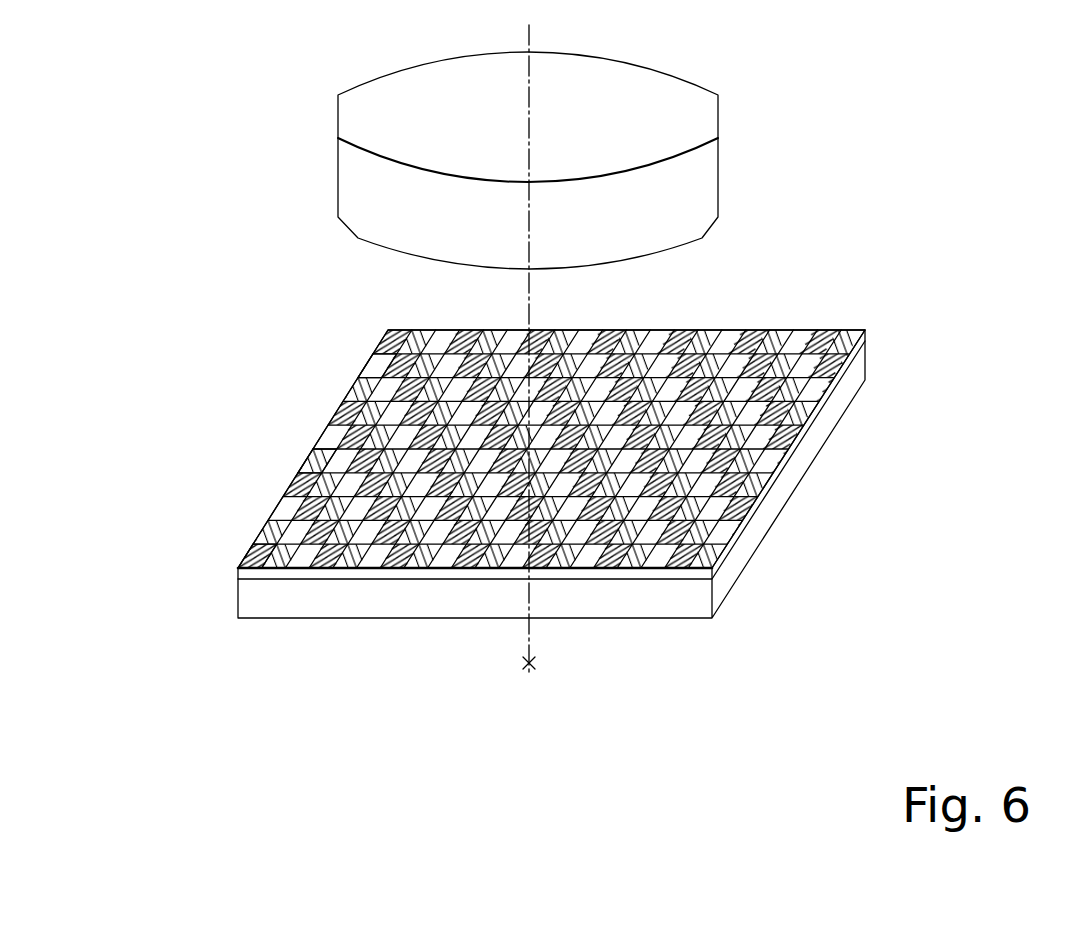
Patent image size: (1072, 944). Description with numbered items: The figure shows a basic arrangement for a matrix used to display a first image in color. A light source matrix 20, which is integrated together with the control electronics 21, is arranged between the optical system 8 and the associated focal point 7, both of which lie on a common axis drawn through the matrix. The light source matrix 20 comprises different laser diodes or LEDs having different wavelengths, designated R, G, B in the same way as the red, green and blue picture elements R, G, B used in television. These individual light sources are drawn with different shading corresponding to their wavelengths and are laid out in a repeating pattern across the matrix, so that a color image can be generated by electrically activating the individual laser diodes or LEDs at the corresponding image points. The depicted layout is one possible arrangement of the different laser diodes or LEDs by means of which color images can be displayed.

The focal point 7 is at (537, 665).
The optical system 8 is at (707, 195).
The light source matrix 20 is at (866, 332).
The control electronics 21 is at (255, 592).
The red picture element R is at (250, 552).
The green picture element G is at (318, 458).
The blue picture element B is at (382, 363).